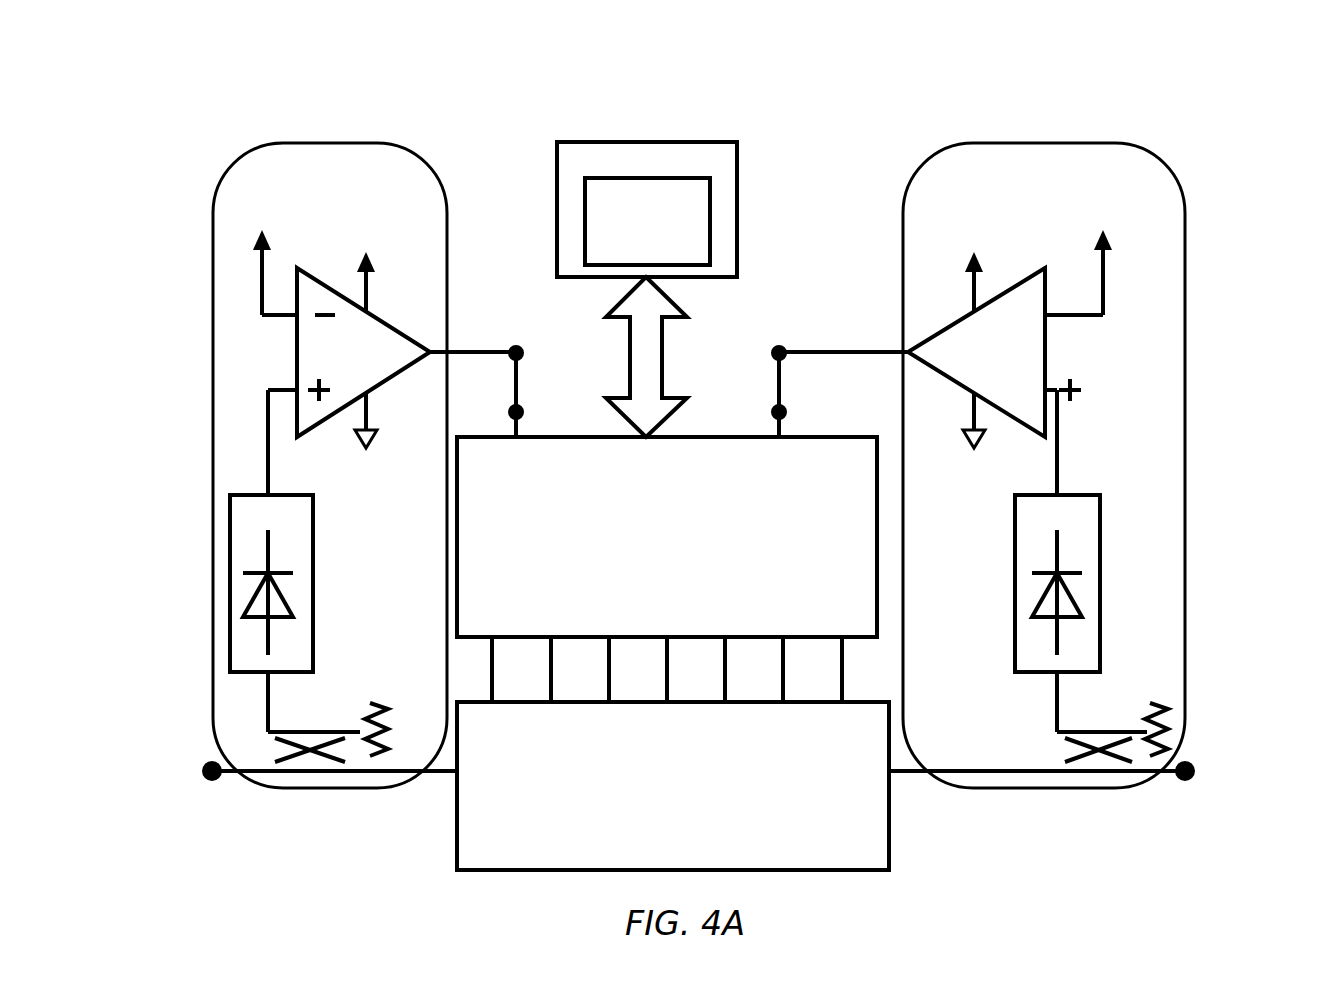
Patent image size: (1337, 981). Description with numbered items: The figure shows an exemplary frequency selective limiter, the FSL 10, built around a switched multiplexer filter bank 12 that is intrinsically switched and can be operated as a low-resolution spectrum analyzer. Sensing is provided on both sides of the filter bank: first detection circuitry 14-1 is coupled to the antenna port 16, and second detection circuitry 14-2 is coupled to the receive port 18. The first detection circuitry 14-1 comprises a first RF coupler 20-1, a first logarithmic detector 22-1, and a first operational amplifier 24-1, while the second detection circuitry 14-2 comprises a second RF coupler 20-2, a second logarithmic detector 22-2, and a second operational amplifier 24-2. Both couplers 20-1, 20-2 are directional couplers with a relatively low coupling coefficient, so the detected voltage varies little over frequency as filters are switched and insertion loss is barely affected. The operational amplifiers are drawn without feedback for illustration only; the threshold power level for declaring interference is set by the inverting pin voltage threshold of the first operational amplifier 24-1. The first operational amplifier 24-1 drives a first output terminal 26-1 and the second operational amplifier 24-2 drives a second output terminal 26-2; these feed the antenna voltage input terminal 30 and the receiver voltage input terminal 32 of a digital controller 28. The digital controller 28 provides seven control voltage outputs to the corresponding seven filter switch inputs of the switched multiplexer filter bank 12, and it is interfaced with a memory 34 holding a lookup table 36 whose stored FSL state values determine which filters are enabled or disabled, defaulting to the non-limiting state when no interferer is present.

The FSL 10 is at (700, 97).
The switched multiplexer filter bank 12 is at (687, 839).
The first detection circuitry 14-1 is at (347, 169).
The second detection circuitry 14-2 is at (1062, 169).
The antenna port 16 is at (212, 780).
The receive port 18 is at (1185, 780).
The first RF coupler 20-1 is at (306, 729).
The second RF coupler 20-2 is at (1096, 729).
The first logarithmic detector 22-1 is at (305, 524).
The second logarithmic detector 22-2 is at (1092, 524).
The first operational amplifier 24-1 is at (370, 362).
The second operational amplifier 24-2 is at (1020, 362).
The first output terminal 26-1 is at (516, 347).
The second output terminal 26-2 is at (779, 347).
The digital controller 28 is at (687, 566).
The antenna voltage input terminal 30 is at (522, 412).
The receiver voltage input terminal 32 is at (785, 412).
The memory 34 is at (730, 170).
The lookup table 36 is at (660, 257).